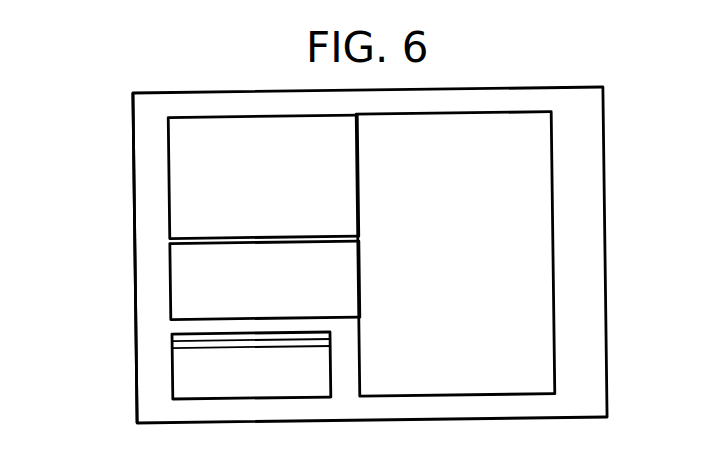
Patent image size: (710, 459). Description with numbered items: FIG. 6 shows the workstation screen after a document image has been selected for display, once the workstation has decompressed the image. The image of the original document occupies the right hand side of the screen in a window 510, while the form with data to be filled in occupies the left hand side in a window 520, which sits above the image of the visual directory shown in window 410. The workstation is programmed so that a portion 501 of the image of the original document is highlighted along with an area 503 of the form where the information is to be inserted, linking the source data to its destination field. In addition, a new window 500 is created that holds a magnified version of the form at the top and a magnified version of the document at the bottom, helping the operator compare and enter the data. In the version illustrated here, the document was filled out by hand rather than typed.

The window 510 is at (566, 232).
The area of the form 503 is at (252, 130).
The new window 500 is at (156, 276).
The window 410 is at (156, 363).
The portion of the image 501 is at (552, 166).
The window 520 is at (156, 161).